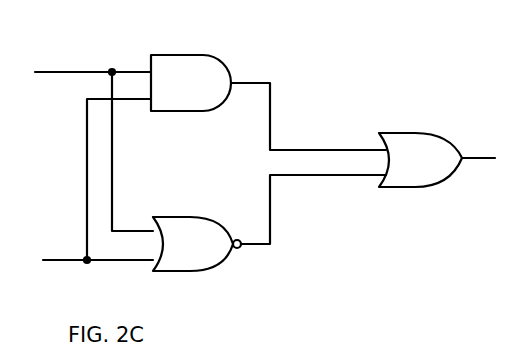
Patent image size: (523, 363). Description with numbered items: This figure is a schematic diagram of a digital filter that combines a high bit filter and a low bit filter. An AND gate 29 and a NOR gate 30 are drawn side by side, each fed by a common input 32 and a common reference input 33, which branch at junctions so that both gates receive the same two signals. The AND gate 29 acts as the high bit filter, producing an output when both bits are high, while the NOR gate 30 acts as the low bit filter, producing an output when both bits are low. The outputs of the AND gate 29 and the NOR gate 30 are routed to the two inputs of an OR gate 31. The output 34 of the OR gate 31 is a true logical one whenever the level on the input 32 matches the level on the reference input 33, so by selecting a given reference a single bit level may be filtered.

The AND gate 29 is at (203, 55).
The NOR gate 30 is at (210, 268).
The OR gate 31 is at (427, 183).
The common input 32 is at (91, 72).
The common reference input 33 is at (55, 262).
The output 34 is at (477, 158).